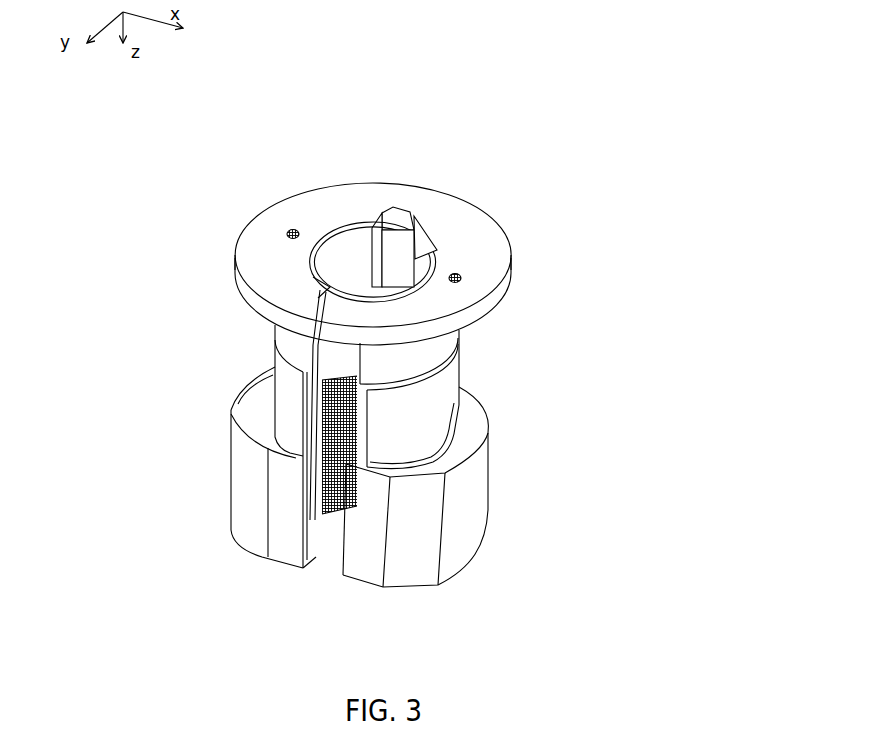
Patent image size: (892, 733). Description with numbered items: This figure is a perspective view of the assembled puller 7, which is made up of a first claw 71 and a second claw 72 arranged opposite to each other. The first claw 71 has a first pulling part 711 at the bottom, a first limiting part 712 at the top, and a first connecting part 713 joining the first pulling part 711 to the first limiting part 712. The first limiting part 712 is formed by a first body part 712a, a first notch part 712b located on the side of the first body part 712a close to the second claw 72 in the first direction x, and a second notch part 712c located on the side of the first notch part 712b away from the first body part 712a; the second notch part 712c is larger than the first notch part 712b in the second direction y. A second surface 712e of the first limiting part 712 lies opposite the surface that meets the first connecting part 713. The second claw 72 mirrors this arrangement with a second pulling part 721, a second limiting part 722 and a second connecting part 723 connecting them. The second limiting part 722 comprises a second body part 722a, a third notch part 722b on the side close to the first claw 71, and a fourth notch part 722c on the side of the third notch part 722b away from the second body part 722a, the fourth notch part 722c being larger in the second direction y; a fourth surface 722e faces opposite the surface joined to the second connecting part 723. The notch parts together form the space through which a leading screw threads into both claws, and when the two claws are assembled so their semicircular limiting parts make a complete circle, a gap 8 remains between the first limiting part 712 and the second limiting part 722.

The puller 7 is at (462, 62).
The gap 8 is at (428, 200).
The first claw 71 is at (280, 560).
The first pulling part 711 is at (247, 500).
The first limiting part 712 is at (237, 208).
The first body part 712a is at (234, 257).
The first notch part 712b is at (322, 237).
The second notch part 712c is at (383, 212).
The second surface 712e is at (270, 260).
The first connecting part 713 is at (274, 366).
The second claw 72 is at (429, 578).
The second pulling part 721 is at (467, 500).
The second limiting part 722 is at (513, 220).
The second body part 722a is at (514, 268).
The third notch part 722b is at (422, 252).
The fourth notch part 722c is at (433, 217).
The fourth surface 722e is at (506, 251).
The second connecting part 723 is at (460, 386).